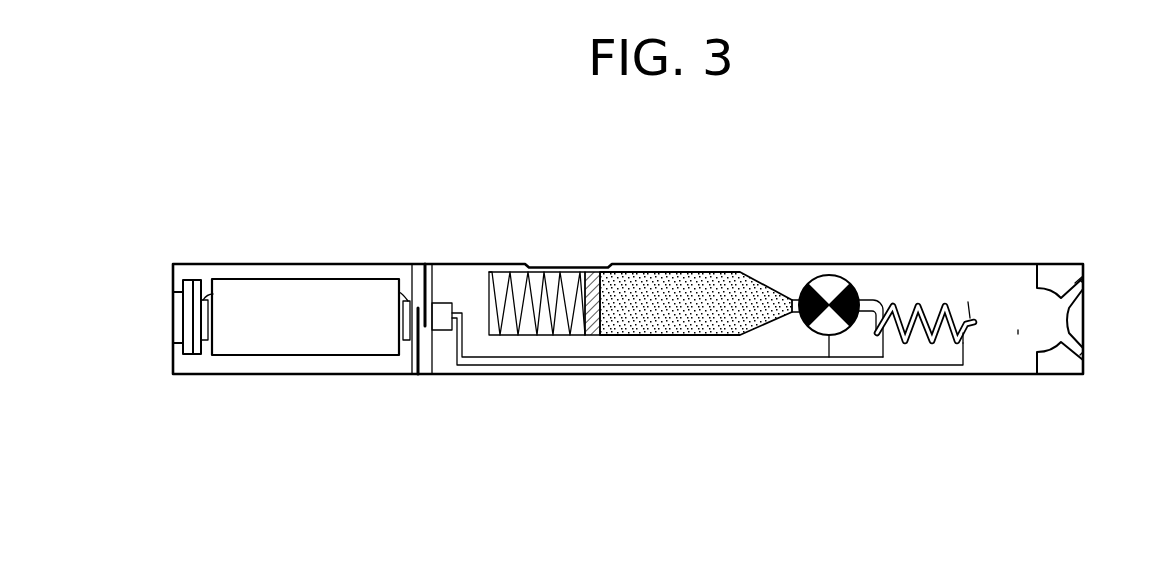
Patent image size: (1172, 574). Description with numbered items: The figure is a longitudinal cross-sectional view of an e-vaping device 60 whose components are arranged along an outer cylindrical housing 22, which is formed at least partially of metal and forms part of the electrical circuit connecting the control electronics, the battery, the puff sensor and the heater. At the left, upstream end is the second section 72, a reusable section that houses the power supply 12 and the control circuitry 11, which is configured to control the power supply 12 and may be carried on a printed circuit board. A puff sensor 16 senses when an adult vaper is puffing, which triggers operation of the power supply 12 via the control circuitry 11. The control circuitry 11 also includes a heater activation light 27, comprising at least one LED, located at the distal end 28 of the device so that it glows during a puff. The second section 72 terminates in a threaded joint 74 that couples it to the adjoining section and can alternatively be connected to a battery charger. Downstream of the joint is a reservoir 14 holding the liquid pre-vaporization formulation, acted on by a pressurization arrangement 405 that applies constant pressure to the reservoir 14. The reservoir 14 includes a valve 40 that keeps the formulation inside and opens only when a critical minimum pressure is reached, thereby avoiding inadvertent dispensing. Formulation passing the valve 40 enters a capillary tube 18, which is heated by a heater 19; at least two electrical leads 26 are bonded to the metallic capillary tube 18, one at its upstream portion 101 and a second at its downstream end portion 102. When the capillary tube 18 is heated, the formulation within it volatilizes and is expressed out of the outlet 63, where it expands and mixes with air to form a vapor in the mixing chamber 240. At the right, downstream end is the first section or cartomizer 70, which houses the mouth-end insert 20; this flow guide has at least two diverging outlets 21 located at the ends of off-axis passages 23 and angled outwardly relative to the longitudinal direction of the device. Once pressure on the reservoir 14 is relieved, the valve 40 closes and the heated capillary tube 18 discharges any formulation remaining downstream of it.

The e-vaping device 60 is at (639, 216).
The outer cylindrical housing 22 is at (651, 375).
The second section 72 is at (304, 264).
The threaded joint 74 is at (419, 264).
The power supply 12 is at (236, 278).
The puff sensor 16 is at (187, 280).
The control circuitry 11 is at (195, 356).
The heater activation light 27 is at (177, 307).
The distal end 28 is at (173, 360).
The pressurization arrangement 405 is at (596, 272).
The reservoir 14 is at (667, 285).
The valve 40 is at (828, 275).
The electrical leads 26 is at (800, 366).
The upstream portion of the capillary tube 101 is at (878, 346).
The capillary tube 18 is at (917, 300).
The heater 19 is at (908, 346).
The downstream end portion of the capillary tube 102 is at (972, 325).
The outlet 63 is at (968, 300).
The first section or cartomizer 70 is at (1003, 264).
The off-axis passages 23 is at (1074, 276).
The mouth-end insert 20 is at (1086, 312).
The diverging outlets 21 is at (1085, 287).
The mixing chamber 240 is at (1018, 332).